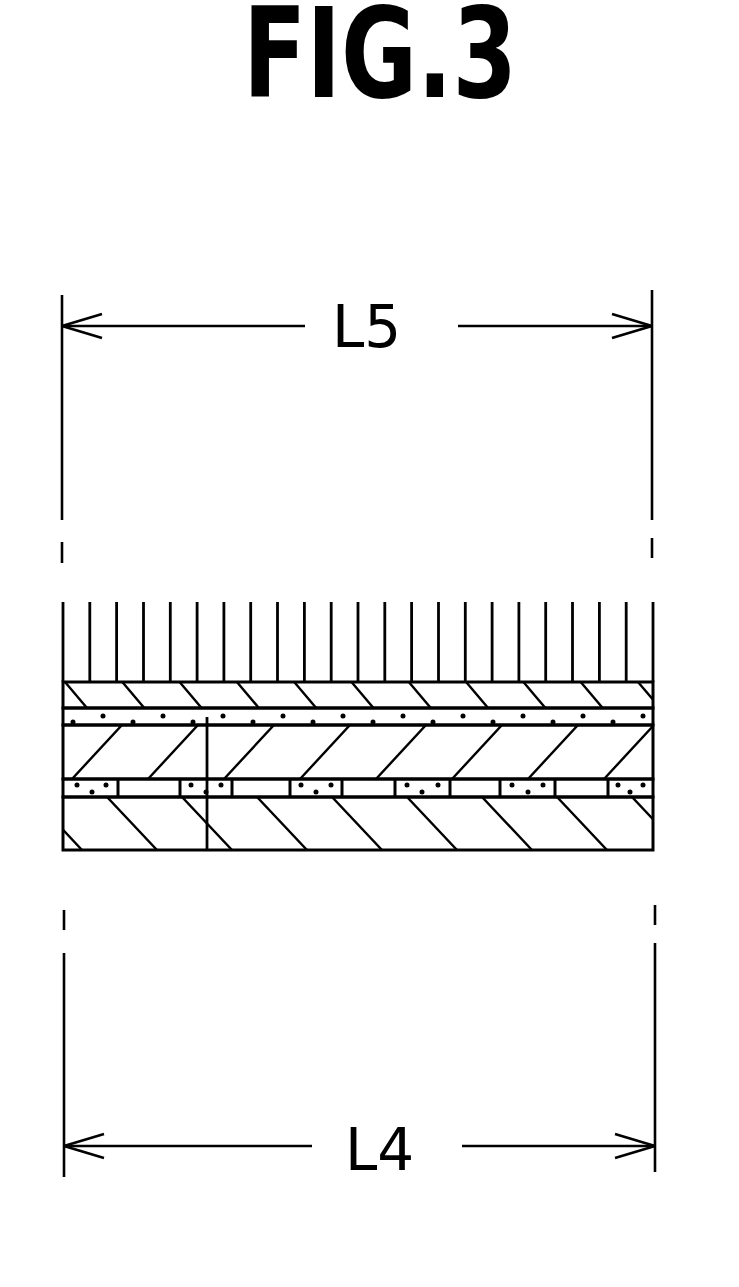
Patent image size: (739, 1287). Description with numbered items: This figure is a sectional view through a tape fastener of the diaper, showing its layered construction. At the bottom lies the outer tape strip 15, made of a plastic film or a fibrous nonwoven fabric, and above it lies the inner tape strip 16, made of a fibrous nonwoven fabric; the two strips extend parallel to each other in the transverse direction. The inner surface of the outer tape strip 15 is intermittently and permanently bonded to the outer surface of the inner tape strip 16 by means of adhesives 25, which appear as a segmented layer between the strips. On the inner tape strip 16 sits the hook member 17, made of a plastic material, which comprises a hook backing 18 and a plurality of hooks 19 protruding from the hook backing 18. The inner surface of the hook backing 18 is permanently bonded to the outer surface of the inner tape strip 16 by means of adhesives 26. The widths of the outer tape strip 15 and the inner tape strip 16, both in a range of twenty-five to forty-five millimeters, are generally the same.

The outer tape strip 15 is at (493, 827).
The inner tape strip 16 is at (360, 763).
The hook member 17 is at (323, 697).
The hook backing 18 is at (562, 700).
The hooks 19 is at (216, 622).
The adhesives 25 is at (303, 787).
The adhesives 26 is at (207, 850).